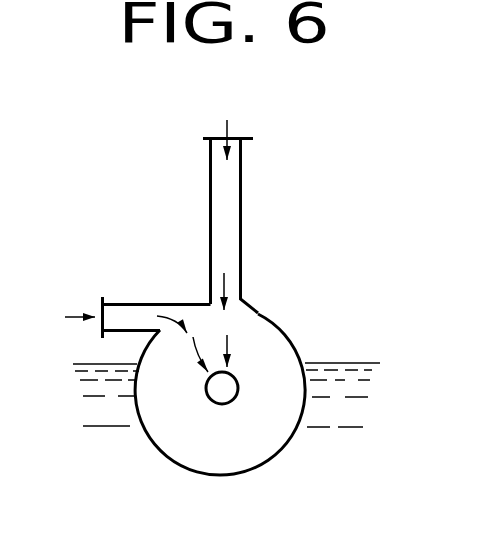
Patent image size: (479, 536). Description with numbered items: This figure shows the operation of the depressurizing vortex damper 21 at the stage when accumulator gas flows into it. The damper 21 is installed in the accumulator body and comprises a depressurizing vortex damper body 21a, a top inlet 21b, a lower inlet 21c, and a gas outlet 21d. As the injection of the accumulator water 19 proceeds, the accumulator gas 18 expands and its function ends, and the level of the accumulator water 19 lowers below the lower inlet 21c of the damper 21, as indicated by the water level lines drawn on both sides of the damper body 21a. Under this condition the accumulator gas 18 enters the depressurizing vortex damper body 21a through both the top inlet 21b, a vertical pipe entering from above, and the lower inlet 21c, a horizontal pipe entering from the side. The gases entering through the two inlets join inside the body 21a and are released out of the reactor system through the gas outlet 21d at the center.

The accumulator gas 18 is at (137, 207).
The accumulator water 19 is at (347, 374).
The depressurizing vortex damper 21 is at (190, 263).
The depressurizing vortex damper body 21a is at (185, 470).
The top inlet 21b is at (204, 152).
The lower inlet 21c is at (136, 318).
The gas outlet 21d is at (238, 380).